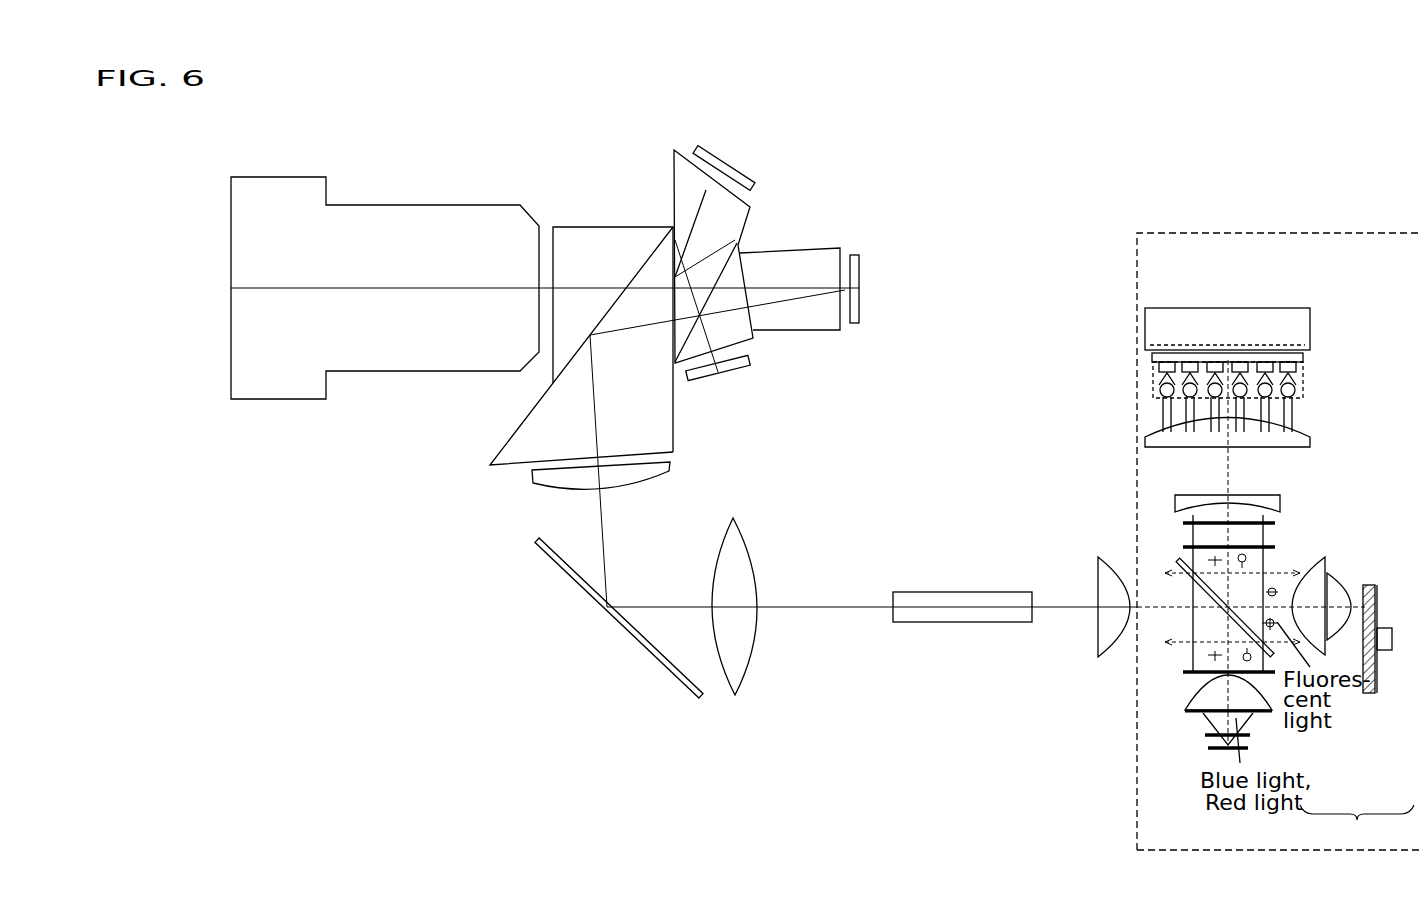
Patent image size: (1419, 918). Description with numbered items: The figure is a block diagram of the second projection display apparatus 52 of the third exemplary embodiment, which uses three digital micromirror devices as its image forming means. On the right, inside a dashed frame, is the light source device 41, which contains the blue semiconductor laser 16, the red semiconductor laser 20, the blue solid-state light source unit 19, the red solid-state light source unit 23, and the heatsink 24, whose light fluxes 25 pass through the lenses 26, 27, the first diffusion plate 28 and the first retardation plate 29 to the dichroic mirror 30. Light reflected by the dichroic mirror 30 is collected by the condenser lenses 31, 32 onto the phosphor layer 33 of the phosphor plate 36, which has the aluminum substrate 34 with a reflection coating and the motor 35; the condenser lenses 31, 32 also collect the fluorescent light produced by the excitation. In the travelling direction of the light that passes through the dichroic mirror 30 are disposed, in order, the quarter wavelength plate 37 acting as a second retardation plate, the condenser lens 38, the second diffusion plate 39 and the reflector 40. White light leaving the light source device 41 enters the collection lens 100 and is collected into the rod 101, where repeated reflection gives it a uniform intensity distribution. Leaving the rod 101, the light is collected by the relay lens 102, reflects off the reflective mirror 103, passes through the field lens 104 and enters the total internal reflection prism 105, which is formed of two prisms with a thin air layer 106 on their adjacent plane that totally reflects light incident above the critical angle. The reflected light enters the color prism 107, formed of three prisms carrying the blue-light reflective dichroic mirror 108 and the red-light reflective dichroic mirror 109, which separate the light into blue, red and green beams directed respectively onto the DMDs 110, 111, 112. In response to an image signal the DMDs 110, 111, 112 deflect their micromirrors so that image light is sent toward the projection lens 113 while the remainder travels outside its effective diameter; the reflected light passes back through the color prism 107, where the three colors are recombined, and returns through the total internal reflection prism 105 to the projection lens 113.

The second projection display apparatus 52 is at (337, 115).
The projection lens 113 is at (448, 203).
The air layer 106 is at (632, 277).
The total internal reflection prism 105 is at (512, 465).
The field lens 104 is at (642, 482).
The blue-light reflective dichroic mirror 108 is at (740, 250).
The red-light reflective dichroic mirror 109 is at (745, 258).
The DMD 110 is at (713, 180).
The DMD 111 is at (742, 368).
The DMD 112 is at (859, 263).
The color prism 107 is at (827, 318).
The reflective mirror 103 is at (672, 672).
The relay lens 102 is at (733, 697).
The rod 101 is at (1005, 620).
The collection lens 100 is at (1098, 638).
The light source device 41 is at (1280, 233).
The heatsink 24 is at (1310, 338).
The red solid-state light source unit 23 is at (1190, 345).
The blue solid-state light source unit 19 is at (1303, 380).
The red semiconductor laser 20 is at (1243, 362).
The blue semiconductor laser 16 is at (1293, 372).
The light fluxes 25 is at (1162, 415).
The lens 26 is at (1162, 443).
The lens 27 is at (1280, 500).
The first diffusion plate 28 is at (1275, 523).
The first retardation plate 29 is at (1275, 547).
The dichroic mirror 30 is at (1178, 560).
The condenser lens 31 is at (1325, 557).
The condenser lens 32 is at (1343, 577).
The phosphor layer 33 is at (1363, 693).
The aluminum substrate 34 is at (1373, 693).
The motor 35 is at (1385, 650).
The phosphor plate 36 is at (1357, 825).
The quarter wavelength plate 37 is at (1183, 672).
The condenser lens 38 is at (1187, 703).
The second diffusion plate 39 is at (1205, 735).
The reflector 40 is at (1208, 749).